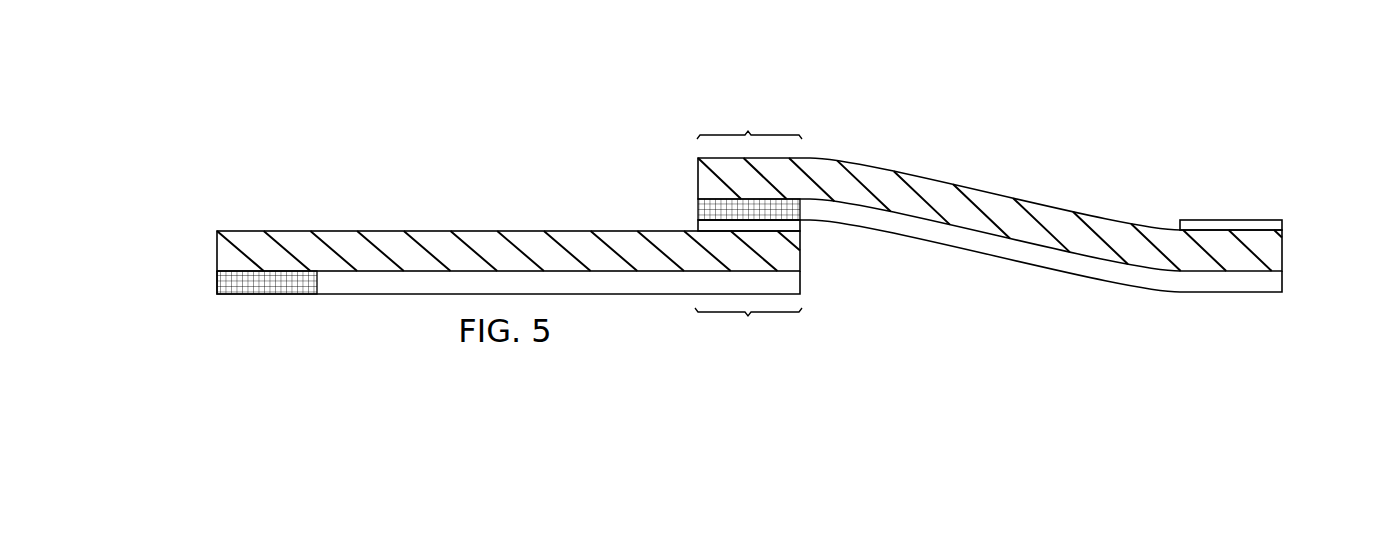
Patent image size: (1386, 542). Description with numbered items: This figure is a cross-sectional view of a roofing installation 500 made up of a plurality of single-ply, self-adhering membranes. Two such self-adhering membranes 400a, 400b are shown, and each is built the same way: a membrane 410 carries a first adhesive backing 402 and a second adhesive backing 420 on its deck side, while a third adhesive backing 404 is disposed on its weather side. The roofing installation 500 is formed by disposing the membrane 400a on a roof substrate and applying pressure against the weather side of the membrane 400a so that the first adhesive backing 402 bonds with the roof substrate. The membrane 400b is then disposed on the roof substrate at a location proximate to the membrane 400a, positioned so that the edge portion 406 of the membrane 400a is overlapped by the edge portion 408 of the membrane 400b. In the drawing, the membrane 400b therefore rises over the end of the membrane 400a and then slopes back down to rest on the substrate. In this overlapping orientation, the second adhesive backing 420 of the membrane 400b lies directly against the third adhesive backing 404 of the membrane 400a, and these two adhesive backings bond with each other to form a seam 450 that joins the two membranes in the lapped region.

The roofing installation 500 is at (963, 72).
The self-adhering membrane 400a is at (419, 167).
The self-adhering membrane 400b is at (1099, 329).
The first adhesive backing 402 is at (393, 287).
The third adhesive backing 404 is at (802, 225).
The edge portion 406 is at (748, 331).
The edge portion 408 is at (749, 121).
The membrane 410 is at (215, 253).
The second adhesive backing 420 is at (215, 278).
The seam 450 is at (685, 185).